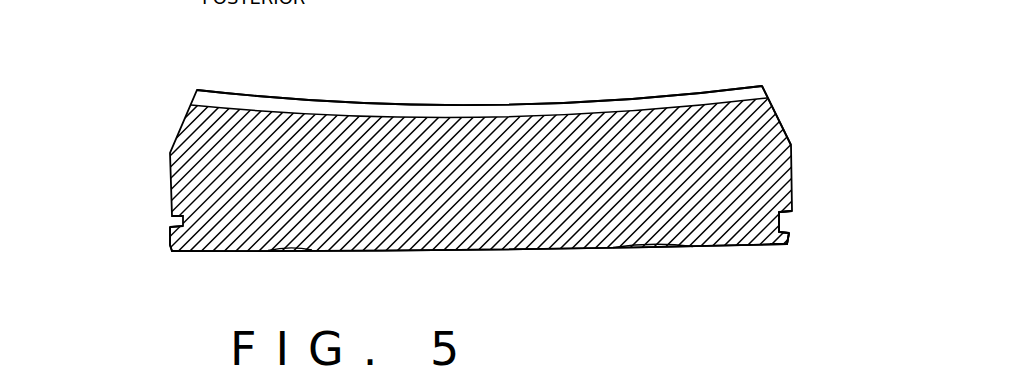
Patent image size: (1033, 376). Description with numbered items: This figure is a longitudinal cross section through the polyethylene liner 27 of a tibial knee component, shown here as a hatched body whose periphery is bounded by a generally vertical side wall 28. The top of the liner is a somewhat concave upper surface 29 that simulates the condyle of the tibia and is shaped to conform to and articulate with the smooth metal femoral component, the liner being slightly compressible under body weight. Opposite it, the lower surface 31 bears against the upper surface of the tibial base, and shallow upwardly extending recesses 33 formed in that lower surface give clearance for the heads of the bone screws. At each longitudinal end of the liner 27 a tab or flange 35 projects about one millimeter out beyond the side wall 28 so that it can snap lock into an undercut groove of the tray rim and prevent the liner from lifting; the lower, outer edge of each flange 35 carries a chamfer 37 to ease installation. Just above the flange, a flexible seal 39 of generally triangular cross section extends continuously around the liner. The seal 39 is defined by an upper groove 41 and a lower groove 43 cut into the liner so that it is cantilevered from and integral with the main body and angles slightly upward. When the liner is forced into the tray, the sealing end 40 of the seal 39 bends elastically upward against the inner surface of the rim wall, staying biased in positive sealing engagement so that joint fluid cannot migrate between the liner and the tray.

The liner 27 is at (787, 72).
The side wall 28 is at (792, 143).
The upper surface 29 is at (443, 118).
The lower surface 31 is at (482, 249).
The recesses 33 is at (303, 250).
The flange 35 is at (787, 233).
The chamfer 37 is at (787, 238).
The flexible seal 39 is at (792, 220).
The sealing end 40 is at (790, 227).
The upper groove 41 is at (800, 208).
The lower groove 43 is at (790, 229).